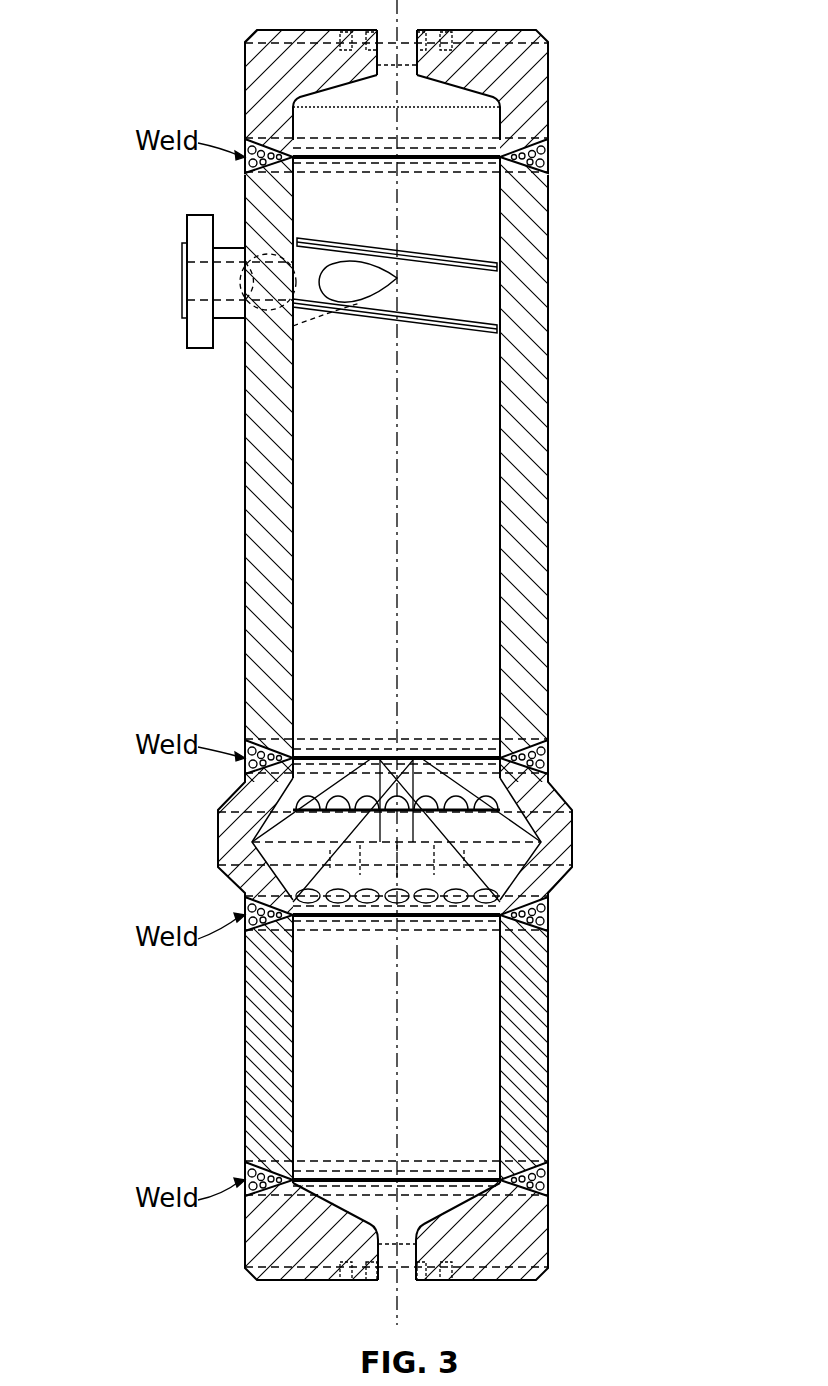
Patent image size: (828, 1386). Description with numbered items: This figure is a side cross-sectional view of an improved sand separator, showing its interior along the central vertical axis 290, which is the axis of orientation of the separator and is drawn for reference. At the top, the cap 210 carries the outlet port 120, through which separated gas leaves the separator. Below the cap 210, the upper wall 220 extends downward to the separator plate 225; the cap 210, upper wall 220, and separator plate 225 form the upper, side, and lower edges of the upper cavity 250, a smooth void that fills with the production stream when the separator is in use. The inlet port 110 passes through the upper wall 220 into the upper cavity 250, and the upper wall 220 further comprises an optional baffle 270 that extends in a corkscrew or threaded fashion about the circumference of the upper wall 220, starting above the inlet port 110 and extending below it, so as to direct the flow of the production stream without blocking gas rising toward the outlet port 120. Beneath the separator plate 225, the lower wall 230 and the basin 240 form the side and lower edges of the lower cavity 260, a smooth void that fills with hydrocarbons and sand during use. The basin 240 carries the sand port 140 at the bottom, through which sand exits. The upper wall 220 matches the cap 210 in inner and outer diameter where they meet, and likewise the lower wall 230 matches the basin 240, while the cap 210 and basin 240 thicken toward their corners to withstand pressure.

The inlet port 110 is at (185, 272).
The outlet port 120 is at (404, 30).
The sand port 140 is at (404, 1282).
The cap 210 is at (533, 100).
The upper wall 220 is at (265, 446).
The separator plate 225 is at (232, 845).
The lower wall 230 is at (260, 1085).
The basin 240 is at (537, 1250).
The upper cavity 250 is at (455, 545).
The lower cavity 260 is at (460, 1055).
The baffle 270 is at (477, 323).
The central vertical axis 290 is at (390, 617).